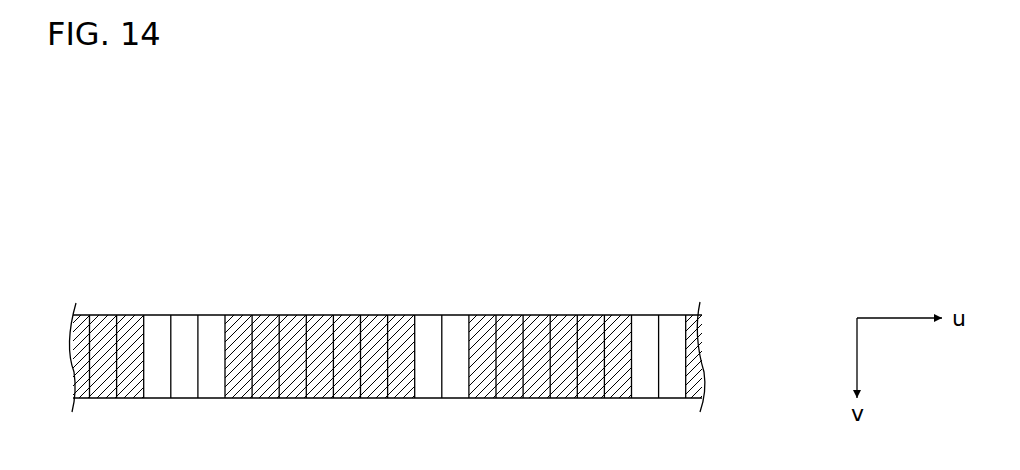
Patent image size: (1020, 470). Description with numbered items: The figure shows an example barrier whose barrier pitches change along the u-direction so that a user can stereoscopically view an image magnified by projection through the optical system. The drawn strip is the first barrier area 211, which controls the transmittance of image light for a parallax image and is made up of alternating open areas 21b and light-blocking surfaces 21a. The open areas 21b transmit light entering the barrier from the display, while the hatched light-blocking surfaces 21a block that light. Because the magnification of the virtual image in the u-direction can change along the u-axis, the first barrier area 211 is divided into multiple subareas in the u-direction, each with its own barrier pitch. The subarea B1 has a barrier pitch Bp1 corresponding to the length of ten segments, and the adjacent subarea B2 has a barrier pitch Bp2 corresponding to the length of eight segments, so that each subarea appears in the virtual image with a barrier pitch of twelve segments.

The first barrier area 211 is at (409, 312).
The light-blocking surface 21a is at (415, 277).
The open area 21b is at (225, 277).
The subarea B1 is at (415, 200).
The subarea B2 is at (632, 200).
The barrier pitch Bp1 is at (415, 231).
The barrier pitch Bp2 is at (632, 231).